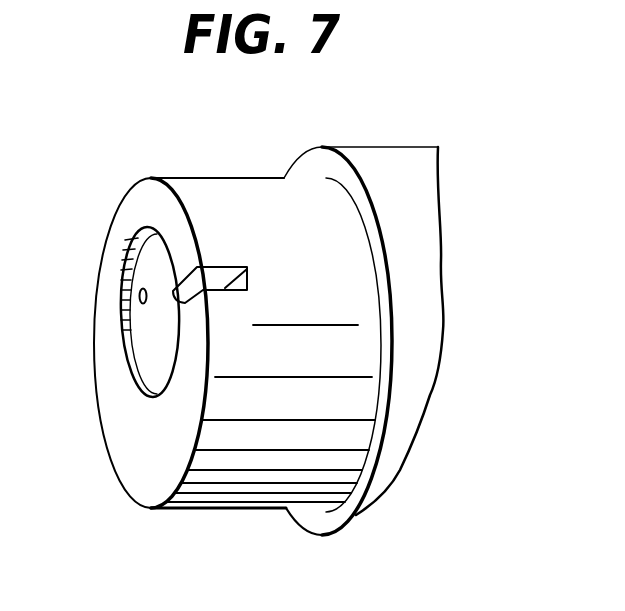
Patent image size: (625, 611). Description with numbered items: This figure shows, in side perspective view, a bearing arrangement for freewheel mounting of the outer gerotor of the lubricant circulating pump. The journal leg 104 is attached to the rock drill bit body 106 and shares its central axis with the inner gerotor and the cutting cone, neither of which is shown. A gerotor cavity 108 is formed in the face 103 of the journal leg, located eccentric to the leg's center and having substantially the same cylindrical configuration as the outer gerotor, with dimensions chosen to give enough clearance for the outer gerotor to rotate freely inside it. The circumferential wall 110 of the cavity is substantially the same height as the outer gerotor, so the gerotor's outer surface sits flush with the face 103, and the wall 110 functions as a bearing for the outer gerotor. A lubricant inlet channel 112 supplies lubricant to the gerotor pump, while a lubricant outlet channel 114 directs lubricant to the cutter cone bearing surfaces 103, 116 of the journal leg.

The face of the journal leg 103 is at (145, 208).
The journal leg 104 is at (261, 177).
The rock drill bit body 106 is at (428, 213).
The gerotor cavity 108 is at (154, 350).
The circumferential wall 110 is at (129, 313).
The lubricant inlet channel 112 is at (137, 294).
The lubricant outlet channel 114 is at (190, 288).
The cutter cone bearing surface 116 is at (235, 438).